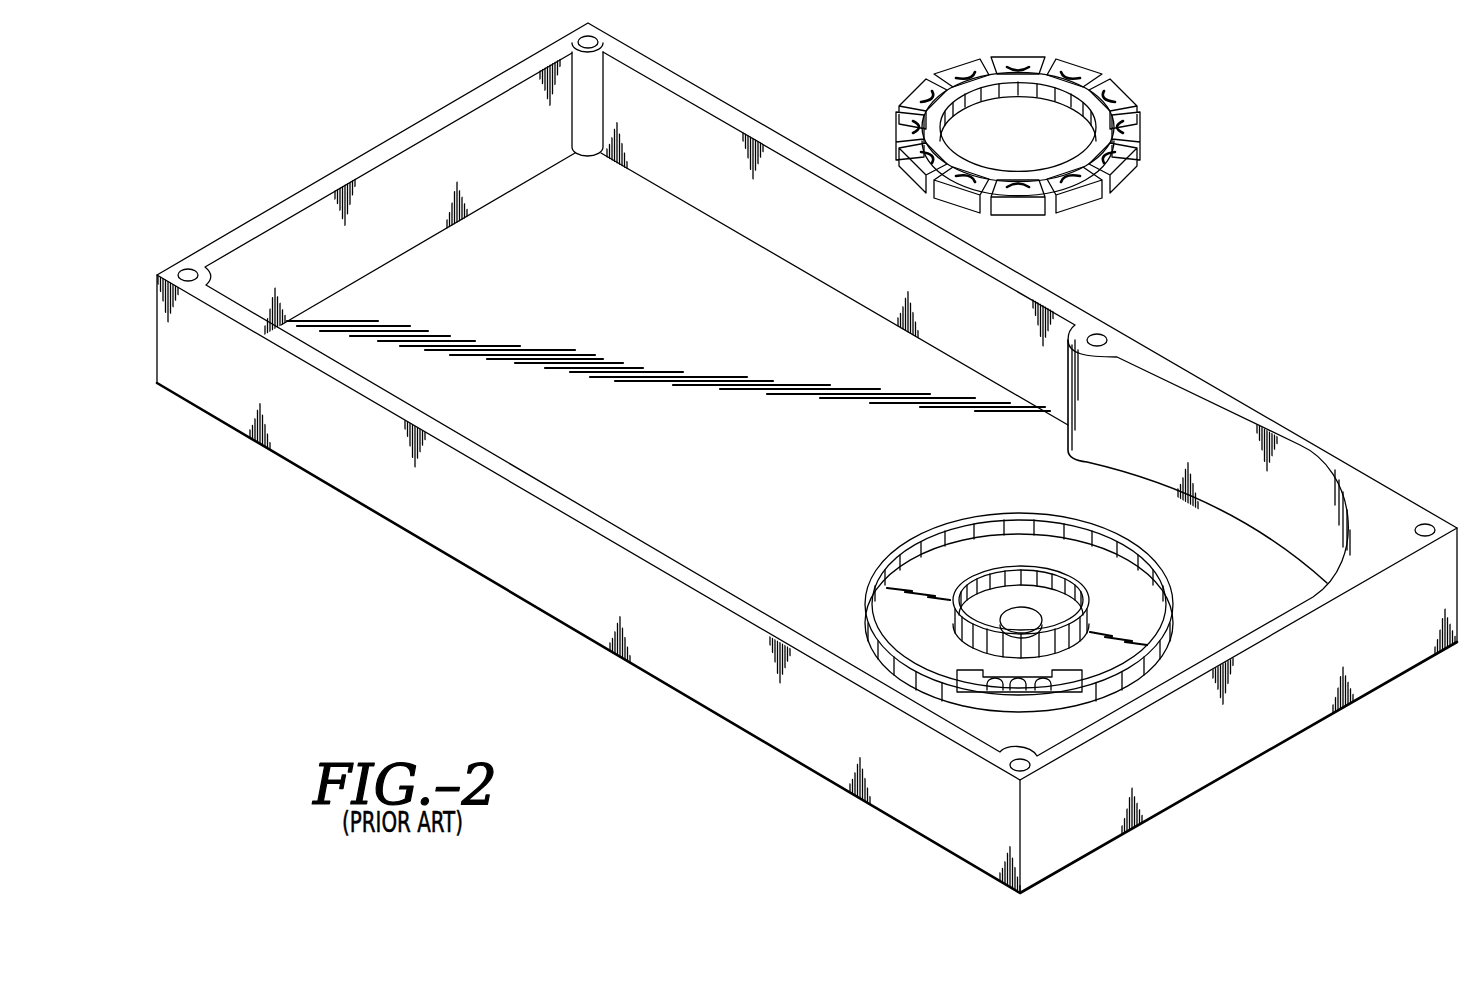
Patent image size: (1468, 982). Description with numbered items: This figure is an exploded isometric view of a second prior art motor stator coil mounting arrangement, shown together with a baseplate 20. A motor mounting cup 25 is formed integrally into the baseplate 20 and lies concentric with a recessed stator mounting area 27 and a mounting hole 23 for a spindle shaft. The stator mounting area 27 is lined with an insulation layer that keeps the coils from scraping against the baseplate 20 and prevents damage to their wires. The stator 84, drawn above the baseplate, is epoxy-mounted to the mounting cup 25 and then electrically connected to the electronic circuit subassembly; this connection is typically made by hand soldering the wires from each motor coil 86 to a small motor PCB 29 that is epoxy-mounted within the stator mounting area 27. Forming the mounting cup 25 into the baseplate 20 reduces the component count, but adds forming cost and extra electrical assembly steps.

The baseplate 20 is at (1353, 472).
The mounting hole 23 is at (1019, 614).
The motor mounting cup 25 is at (1088, 600).
The stator mounting area 27 is at (1135, 616).
The motor PCB 29 is at (968, 677).
The stator 84 is at (1128, 177).
The motor coil 86 is at (970, 166).